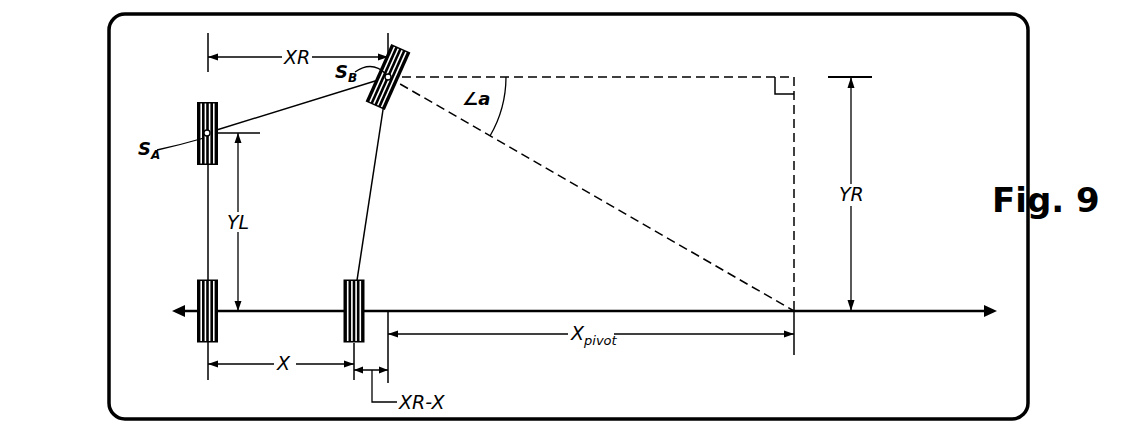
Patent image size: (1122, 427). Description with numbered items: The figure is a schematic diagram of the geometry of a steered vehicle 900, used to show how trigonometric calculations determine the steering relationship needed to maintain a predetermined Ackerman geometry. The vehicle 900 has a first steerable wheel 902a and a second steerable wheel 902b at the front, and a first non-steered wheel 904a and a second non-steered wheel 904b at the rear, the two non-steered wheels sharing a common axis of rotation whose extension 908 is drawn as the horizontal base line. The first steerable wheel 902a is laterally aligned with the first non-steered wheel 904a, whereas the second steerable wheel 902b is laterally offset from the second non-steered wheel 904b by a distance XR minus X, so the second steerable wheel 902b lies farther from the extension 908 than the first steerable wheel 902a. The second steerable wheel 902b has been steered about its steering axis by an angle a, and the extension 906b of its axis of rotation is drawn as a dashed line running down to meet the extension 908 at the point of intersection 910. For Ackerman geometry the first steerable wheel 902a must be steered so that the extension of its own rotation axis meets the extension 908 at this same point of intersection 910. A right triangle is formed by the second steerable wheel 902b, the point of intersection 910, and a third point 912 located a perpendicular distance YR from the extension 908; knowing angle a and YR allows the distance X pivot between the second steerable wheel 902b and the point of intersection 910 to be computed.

The vehicle 900 is at (207, 210).
The first steerable wheel 902a is at (197, 130).
The second steerable wheel 902b is at (392, 100).
The first non-steered wheel 904a is at (197, 296).
The second non-steered wheel 904b is at (367, 293).
The extension of axis of rotation of second steerable wheel 906b is at (613, 208).
The extension of axis of rotation shared by non-steered wheels 908 is at (960, 310).
The point of intersection 910 is at (797, 310).
The third point 912 is at (796, 76).